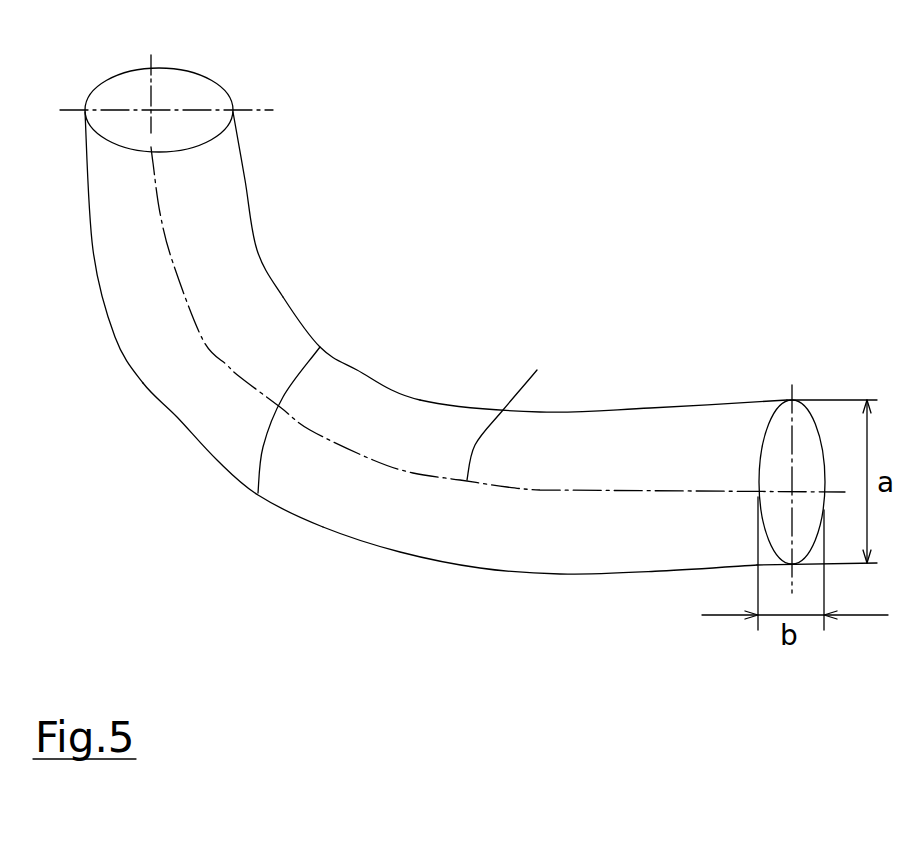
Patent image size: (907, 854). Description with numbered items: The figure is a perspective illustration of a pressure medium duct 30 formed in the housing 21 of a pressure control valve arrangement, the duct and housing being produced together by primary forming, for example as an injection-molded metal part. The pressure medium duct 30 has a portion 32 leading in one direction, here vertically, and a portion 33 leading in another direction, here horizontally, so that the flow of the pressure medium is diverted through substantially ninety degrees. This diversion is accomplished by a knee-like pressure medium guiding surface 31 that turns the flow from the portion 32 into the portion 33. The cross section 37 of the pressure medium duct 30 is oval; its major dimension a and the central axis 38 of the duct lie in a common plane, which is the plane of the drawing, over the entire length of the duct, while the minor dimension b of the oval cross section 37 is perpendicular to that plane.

The housing 21 is at (562, 219).
The pressure medium duct 30 is at (345, 372).
The knee-like pressure medium guiding surface 31 is at (320, 347).
The portion of the pressure medium duct leading in one direction 32 is at (225, 190).
The portion of the pressure medium duct leading in another direction 33 is at (665, 423).
The oval cross section 37 is at (185, 90).
The central axis 38 is at (537, 370).